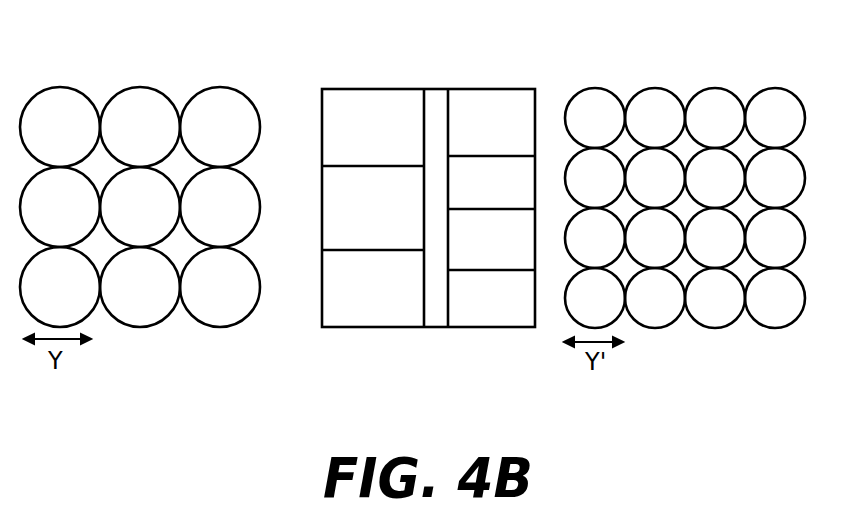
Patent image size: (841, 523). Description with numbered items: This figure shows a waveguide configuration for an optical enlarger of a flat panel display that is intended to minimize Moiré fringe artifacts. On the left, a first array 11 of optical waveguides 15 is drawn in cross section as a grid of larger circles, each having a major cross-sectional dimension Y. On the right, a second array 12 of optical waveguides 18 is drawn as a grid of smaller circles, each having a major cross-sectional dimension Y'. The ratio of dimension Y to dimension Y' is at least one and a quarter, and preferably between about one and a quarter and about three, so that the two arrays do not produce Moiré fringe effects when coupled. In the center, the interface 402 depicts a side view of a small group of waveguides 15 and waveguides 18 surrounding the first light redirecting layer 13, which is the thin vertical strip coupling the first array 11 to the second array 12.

The first array 11 is at (141, 87).
The second array 12 is at (713, 88).
The first light redirecting layer 13 is at (437, 100).
The optical waveguides 15 is at (215, 303).
The optical waveguides 18 is at (472, 312).
The interface 402 is at (364, 89).